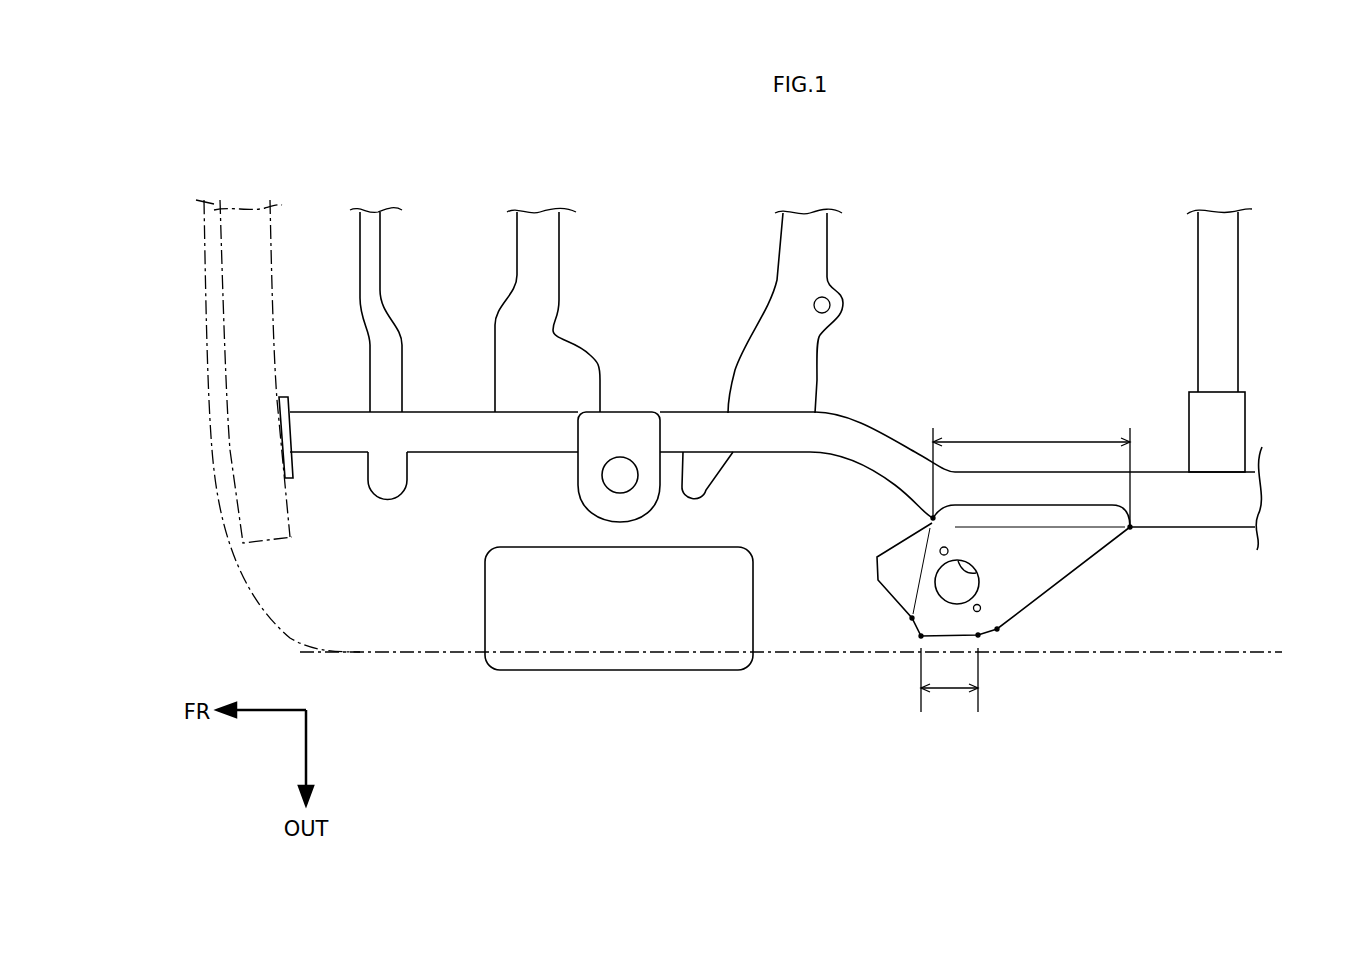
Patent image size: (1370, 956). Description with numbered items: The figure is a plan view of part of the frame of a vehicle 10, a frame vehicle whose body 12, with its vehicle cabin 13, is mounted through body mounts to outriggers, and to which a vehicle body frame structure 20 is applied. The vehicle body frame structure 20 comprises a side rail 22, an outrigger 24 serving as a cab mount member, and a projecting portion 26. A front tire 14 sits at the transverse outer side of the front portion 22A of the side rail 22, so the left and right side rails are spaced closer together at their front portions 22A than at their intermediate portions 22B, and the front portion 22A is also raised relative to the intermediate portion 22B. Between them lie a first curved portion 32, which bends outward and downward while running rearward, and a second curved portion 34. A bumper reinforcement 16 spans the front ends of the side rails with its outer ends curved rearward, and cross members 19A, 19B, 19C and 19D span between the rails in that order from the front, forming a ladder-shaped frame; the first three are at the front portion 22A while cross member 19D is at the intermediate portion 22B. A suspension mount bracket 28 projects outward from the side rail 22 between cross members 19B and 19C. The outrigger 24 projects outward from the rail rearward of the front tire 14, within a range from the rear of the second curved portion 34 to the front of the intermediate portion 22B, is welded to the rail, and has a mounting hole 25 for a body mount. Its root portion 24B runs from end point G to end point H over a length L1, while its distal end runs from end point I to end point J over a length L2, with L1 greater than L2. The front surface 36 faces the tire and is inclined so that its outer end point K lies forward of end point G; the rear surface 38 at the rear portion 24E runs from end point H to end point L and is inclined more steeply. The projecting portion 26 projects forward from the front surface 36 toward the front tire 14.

The vehicle 10 is at (1188, 703).
The body 12 is at (1143, 660).
The vehicle cabin 13 is at (1118, 282).
The front tire 14 is at (603, 665).
The bumper reinforcement 16 is at (213, 323).
The cross member 19A is at (385, 255).
The cross member 19B is at (563, 250).
The cross member 19C is at (830, 250).
The cross member 19D is at (1240, 282).
The vehicle body frame structure 20 is at (868, 539).
The side rail 22 is at (468, 456).
The front portion 22A is at (520, 455).
The intermediate portion 22B is at (1197, 528).
The outrigger 24 is at (1066, 576).
The root portion 24B is at (1060, 536).
The rear portion 24E is at (1052, 590).
The mounting hole 25 is at (970, 574).
The projecting portion 26 is at (873, 581).
The suspension mount bracket 28 is at (661, 505).
The first curved portion 32 is at (866, 410).
The second curved portion 34 is at (952, 464).
The front surface 36 is at (927, 518).
The rear surface 38 is at (1080, 568).
The end point G is at (928, 519).
The end point H is at (1134, 530).
The end point I is at (918, 636).
The end point J is at (981, 640).
The end point K is at (910, 619).
The end point L is at (999, 630).
The length L1 is at (1028, 440).
The length L2 is at (948, 695).